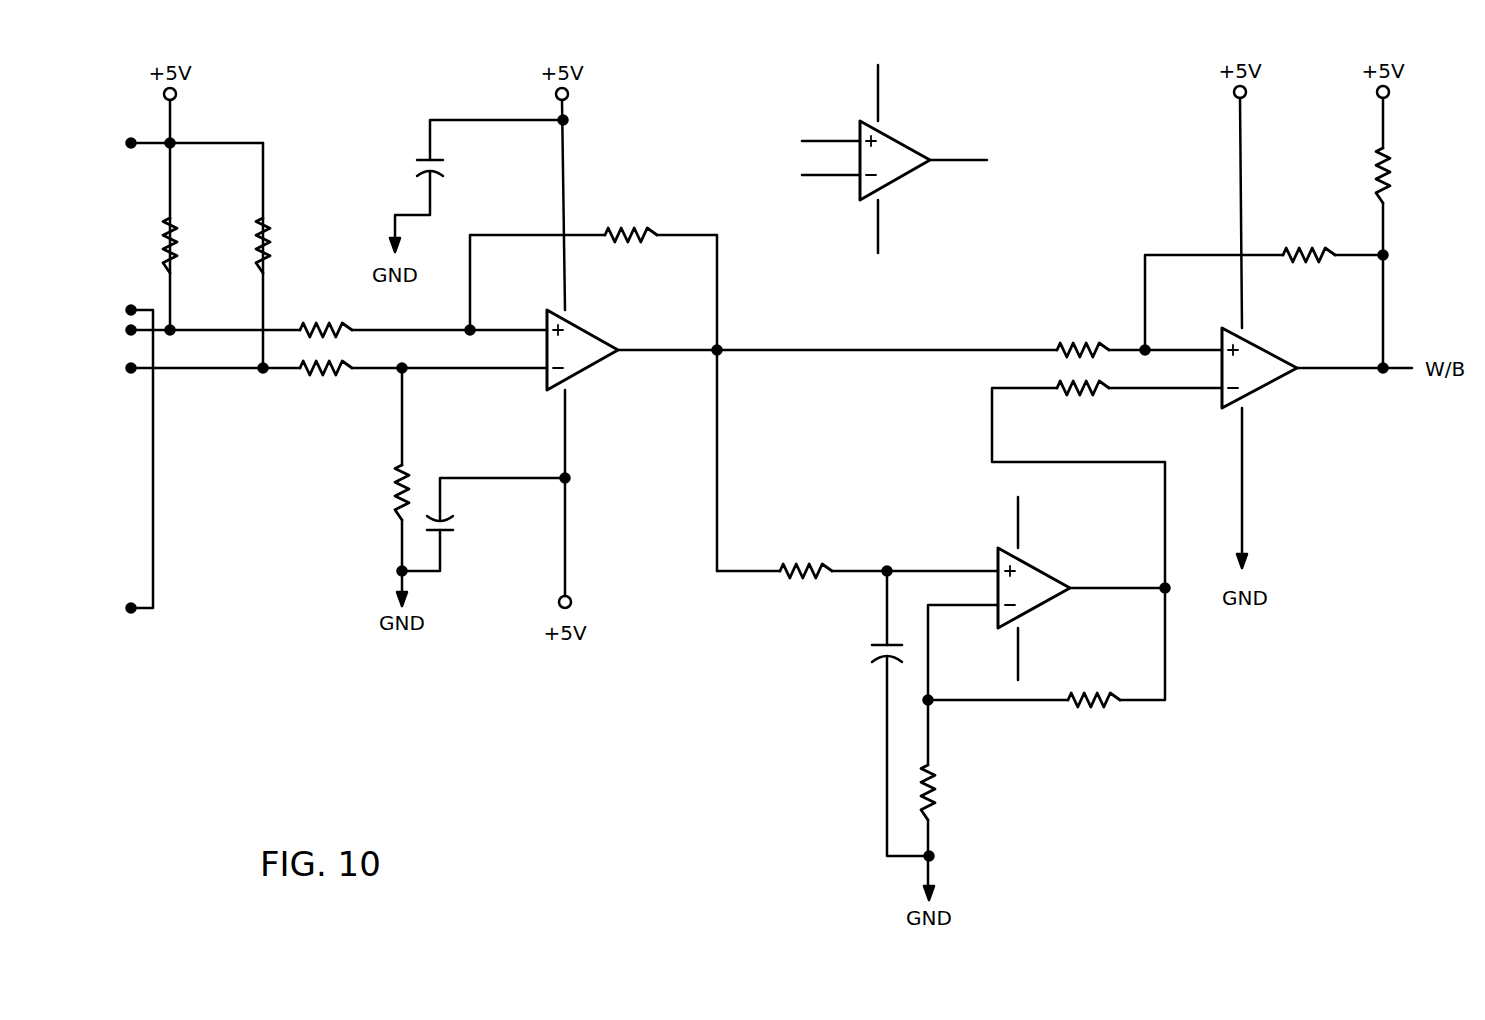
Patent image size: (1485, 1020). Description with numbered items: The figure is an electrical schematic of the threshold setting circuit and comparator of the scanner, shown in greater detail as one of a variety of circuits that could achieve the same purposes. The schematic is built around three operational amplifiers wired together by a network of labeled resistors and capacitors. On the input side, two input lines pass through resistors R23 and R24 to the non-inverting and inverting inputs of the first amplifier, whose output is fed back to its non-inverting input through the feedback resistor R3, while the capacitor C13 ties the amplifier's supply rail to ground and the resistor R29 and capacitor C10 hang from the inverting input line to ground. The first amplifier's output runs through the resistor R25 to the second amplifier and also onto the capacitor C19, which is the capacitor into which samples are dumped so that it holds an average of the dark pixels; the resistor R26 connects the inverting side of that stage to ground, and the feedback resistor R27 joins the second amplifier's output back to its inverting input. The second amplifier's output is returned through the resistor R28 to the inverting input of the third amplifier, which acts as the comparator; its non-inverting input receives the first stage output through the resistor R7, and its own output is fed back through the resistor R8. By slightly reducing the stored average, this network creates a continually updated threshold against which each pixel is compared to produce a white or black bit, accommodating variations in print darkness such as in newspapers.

The resistor R23 is at (326, 318).
The resistor R24 is at (326, 383).
The feedback resistor R3 is at (593, 387).
The capacitor C13 is at (476, 186).
The resistor R29 is at (380, 487).
The capacitor C10 is at (483, 524).
The resistor R25 is at (857, 557).
The capacitor C19 is at (877, 713).
The resistor R26 is at (959, 745).
The feedback resistor R27 is at (1046, 664).
The resistor R28 is at (1107, 484).
The resistor R7 is at (1139, 335).
The feedback resistor R8 is at (1264, 285).